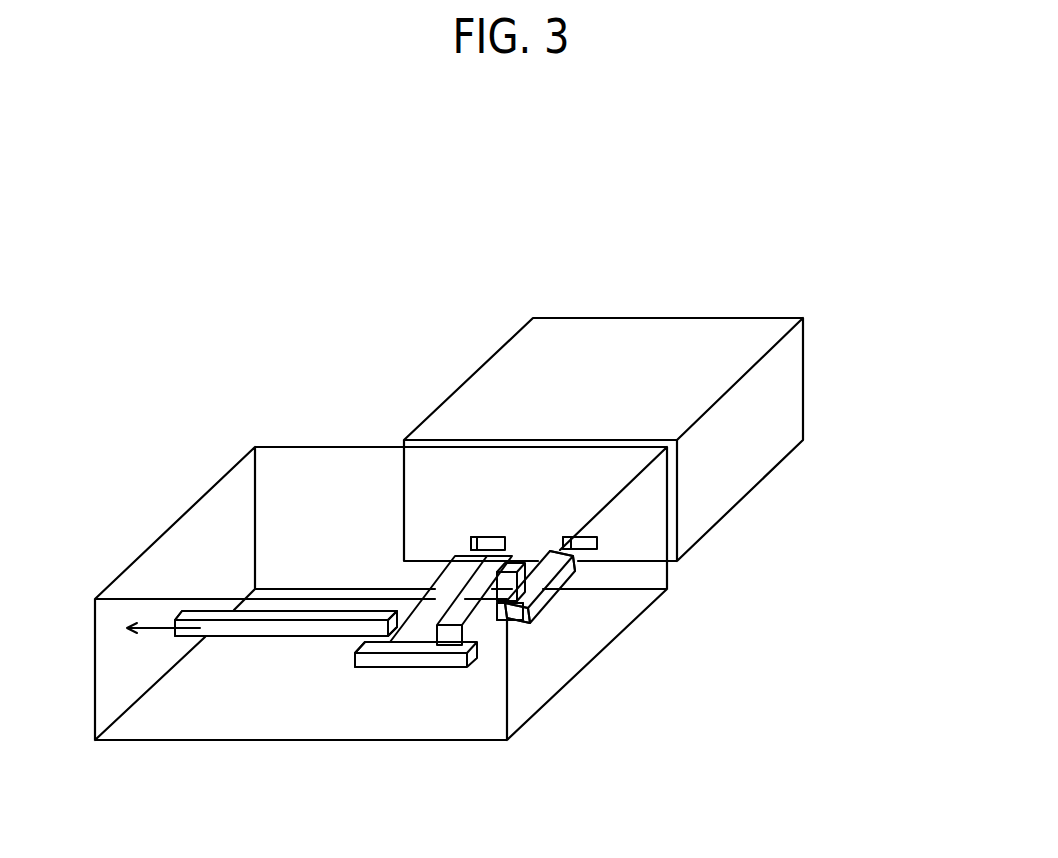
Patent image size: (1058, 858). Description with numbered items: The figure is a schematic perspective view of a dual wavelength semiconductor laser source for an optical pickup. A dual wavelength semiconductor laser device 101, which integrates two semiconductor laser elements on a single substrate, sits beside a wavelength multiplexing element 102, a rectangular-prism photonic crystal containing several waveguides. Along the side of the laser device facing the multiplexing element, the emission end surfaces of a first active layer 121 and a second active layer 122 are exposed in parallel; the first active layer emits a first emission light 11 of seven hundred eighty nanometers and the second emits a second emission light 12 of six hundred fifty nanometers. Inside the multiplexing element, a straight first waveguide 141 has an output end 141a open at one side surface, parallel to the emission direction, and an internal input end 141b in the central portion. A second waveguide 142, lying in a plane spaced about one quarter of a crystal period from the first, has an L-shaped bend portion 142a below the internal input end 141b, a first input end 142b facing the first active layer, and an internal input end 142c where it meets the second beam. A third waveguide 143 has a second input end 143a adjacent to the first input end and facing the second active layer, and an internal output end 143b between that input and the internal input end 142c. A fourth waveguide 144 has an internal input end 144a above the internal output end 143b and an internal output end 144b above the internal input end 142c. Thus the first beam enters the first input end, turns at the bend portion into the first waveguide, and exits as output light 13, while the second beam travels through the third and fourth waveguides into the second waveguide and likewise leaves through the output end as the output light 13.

The dual wavelength semiconductor laser device 101 is at (805, 346).
The wavelength multiplexing element 102 is at (282, 447).
The first emission light 11 is at (473, 537).
The second emission light 12 is at (590, 589).
The first active layer 121 is at (502, 537).
The second active layer 122 is at (590, 537).
The output light 13 is at (157, 633).
The first waveguide 141 is at (250, 598).
The output end 141a is at (195, 592).
The internal input end 141b is at (393, 593).
The second waveguide 142 is at (363, 588).
The bend portion 142a is at (353, 690).
The first input end 142b is at (458, 535).
The internal input end 142c is at (462, 660).
The third waveguide 143 is at (645, 704).
The second input end 143a is at (592, 567).
The internal output end 143b is at (513, 640).
The fourth waveguide 144 is at (565, 710).
The internal input end 144a is at (510, 603).
The internal output end 144b is at (466, 668).